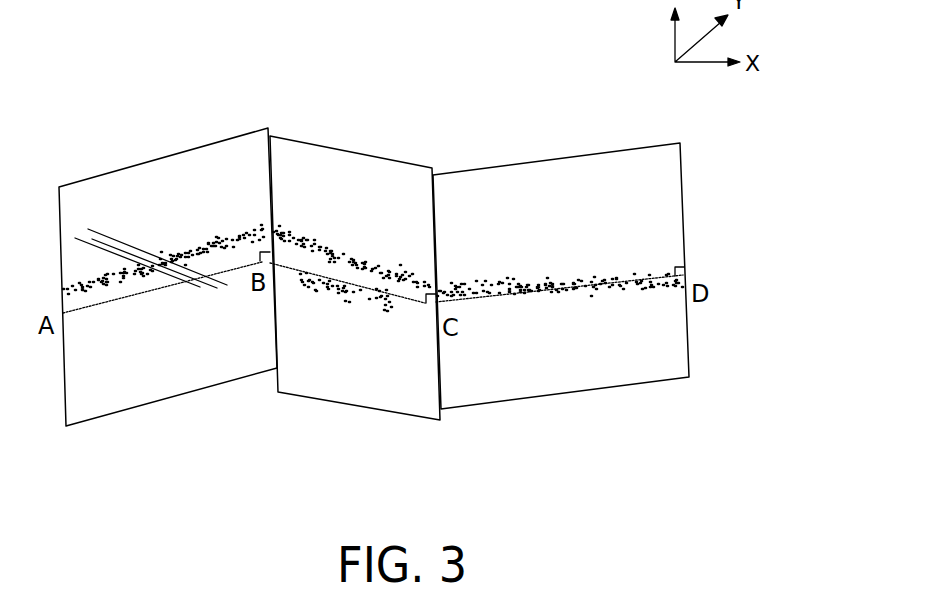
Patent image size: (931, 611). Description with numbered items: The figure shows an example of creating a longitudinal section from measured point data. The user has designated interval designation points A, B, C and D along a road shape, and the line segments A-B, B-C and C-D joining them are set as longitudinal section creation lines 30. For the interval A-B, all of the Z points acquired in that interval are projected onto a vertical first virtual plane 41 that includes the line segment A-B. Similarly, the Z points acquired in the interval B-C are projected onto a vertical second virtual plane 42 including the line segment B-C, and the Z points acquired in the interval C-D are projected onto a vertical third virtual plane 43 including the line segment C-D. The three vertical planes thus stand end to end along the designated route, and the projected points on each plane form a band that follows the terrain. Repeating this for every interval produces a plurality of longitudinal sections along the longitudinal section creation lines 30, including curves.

The longitudinal section creation line 30 is at (152, 292).
The first virtual plane 41 is at (150, 160).
The second virtual plane 42 is at (355, 152).
The third virtual plane 43 is at (565, 158).